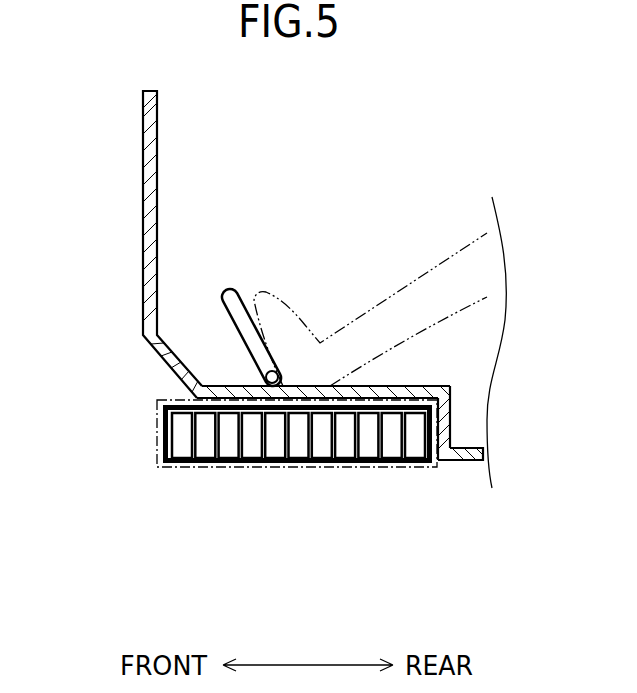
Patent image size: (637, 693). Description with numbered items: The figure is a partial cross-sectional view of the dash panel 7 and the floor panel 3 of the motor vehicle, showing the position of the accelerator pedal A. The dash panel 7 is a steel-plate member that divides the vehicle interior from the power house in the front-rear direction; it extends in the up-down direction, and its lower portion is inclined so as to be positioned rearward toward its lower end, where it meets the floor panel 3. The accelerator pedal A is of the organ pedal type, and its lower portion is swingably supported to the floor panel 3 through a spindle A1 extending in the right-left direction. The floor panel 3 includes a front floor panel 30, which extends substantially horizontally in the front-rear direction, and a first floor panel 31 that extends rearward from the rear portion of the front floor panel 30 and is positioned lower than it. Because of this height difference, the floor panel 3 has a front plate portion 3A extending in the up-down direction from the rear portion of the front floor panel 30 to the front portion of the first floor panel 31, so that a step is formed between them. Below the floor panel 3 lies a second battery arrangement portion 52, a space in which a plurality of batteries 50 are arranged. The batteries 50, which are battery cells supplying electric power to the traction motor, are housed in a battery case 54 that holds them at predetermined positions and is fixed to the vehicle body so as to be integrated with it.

The dash panel 7 is at (143, 193).
The accelerator pedal A is at (225, 311).
The spindle A1 is at (266, 377).
The front floor panel 30 is at (428, 386).
The floor panel 3 is at (499, 478).
The front plate portion 3A is at (450, 423).
The first floor panel 31 is at (473, 461).
The battery 50 is at (280, 440).
The second battery arrangement portion 52 is at (168, 467).
The battery case 54 is at (215, 463).